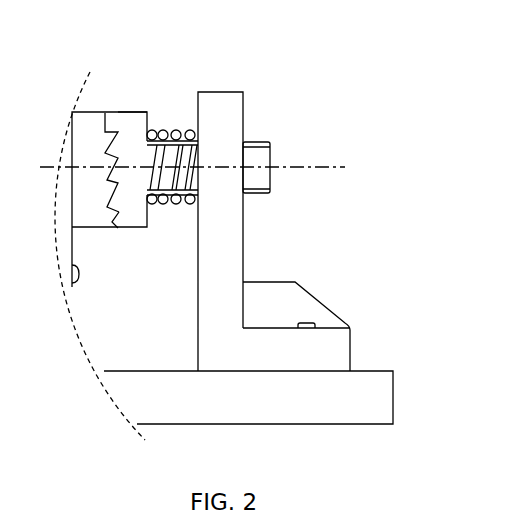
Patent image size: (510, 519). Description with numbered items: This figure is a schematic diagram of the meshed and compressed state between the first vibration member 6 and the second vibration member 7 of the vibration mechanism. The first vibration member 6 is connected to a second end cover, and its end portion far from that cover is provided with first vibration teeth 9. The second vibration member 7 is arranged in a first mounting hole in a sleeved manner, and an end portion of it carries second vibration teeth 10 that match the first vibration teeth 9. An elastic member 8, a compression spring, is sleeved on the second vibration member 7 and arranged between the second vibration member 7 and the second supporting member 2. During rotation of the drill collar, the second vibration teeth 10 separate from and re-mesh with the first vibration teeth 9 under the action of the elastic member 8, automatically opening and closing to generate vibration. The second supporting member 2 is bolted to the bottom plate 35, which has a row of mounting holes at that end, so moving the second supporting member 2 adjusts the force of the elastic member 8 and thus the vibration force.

The second supporting member 2 is at (232, 137).
The first vibration member 6 is at (81, 118).
The second vibration member 7 is at (133, 112).
The elastic member 8 is at (180, 121).
The first vibration teeth 9 is at (117, 205).
The second vibration teeth 10 is at (111, 111).
The bottom plate 35 is at (140, 386).